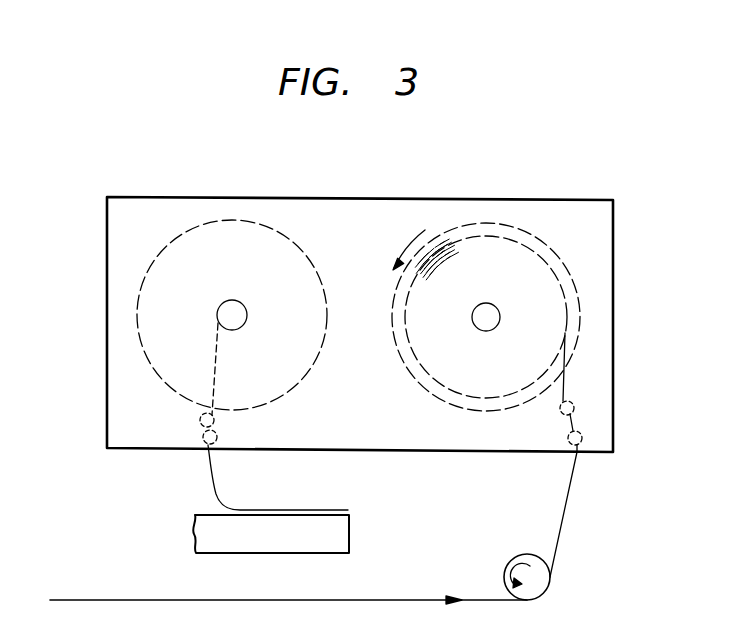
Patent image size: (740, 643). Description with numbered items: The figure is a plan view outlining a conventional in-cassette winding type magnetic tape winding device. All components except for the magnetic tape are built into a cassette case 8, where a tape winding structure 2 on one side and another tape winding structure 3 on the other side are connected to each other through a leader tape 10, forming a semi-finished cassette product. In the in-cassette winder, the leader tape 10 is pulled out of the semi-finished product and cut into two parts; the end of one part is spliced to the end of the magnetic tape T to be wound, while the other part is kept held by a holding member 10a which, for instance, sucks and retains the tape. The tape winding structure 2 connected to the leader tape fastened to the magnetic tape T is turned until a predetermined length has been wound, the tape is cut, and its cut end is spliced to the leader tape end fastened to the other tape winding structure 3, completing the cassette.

The cassette case 8 is at (545, 200).
The tape winding structure 3 is at (158, 252).
The tape winding structure 2 is at (558, 256).
The magnetic tape T is at (561, 521).
The leader tape 10 is at (226, 501).
The holding member 10a is at (350, 538).